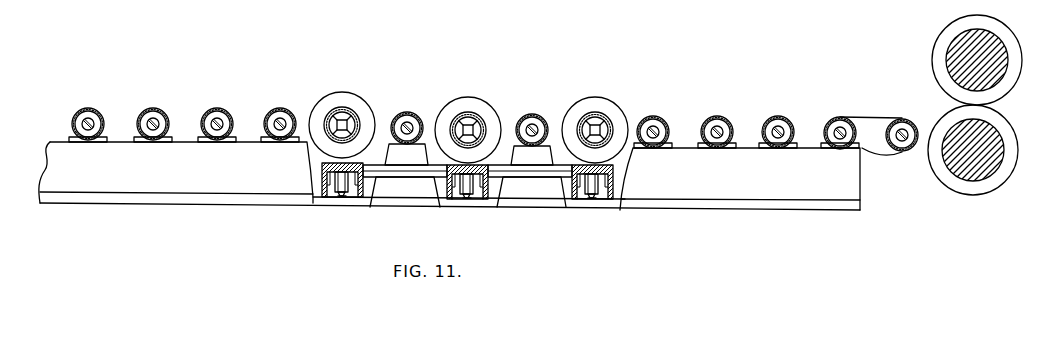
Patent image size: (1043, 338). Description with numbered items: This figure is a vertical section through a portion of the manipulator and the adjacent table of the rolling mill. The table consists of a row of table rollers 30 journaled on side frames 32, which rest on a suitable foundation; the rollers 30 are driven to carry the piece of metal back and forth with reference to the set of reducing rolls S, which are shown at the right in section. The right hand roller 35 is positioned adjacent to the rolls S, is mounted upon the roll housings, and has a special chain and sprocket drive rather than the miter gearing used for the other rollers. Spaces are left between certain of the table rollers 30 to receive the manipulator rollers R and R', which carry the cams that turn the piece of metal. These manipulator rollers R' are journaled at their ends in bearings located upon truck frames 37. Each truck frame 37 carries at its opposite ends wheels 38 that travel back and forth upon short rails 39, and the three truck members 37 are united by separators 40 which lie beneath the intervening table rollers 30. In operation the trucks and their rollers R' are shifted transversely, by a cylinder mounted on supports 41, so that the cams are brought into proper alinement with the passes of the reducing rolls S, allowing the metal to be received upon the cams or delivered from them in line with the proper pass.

The table rollers 30 is at (210, 112).
The side frame 32 is at (177, 203).
The right hand roller 35 is at (898, 118).
The truck frames 37 is at (363, 198).
The wheels 38 is at (337, 198).
The short rails 39 is at (342, 200).
The separators 40 is at (420, 169).
The supports 41 is at (880, 158).
The roll R is at (349, 124).
The manipulator rollers R' is at (537, 126).
The reducing rolls S is at (946, 97).